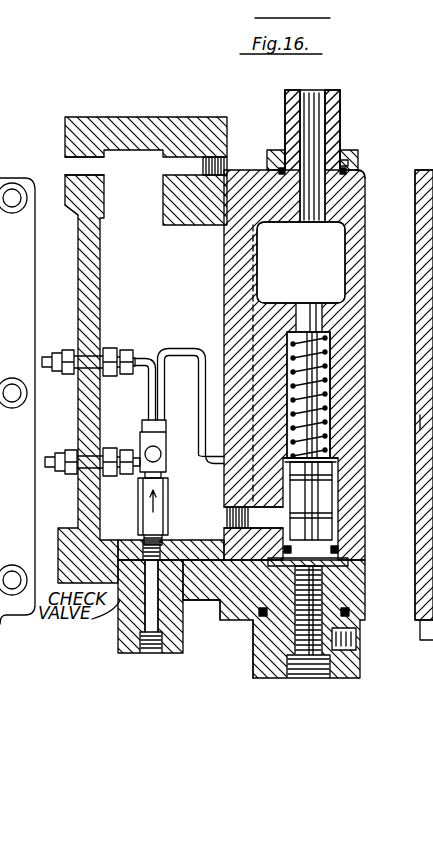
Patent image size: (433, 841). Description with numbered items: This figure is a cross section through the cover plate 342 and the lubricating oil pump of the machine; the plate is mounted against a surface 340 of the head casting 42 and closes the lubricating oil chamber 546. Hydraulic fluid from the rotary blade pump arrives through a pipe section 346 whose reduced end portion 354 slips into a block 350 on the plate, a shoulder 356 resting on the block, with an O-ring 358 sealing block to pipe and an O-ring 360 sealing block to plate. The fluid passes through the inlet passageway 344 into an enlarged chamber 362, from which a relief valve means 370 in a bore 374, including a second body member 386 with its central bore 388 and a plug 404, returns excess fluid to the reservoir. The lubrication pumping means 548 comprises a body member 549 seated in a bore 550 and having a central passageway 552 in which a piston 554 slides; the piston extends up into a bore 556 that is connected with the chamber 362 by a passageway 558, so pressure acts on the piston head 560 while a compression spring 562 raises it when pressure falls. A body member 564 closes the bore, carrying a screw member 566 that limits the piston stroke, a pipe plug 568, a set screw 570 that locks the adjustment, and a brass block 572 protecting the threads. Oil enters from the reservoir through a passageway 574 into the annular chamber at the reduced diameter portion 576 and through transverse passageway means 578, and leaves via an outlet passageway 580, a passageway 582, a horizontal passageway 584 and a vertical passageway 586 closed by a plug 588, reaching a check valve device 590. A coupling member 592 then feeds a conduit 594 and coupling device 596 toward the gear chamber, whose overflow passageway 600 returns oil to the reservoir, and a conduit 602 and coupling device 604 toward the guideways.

The housing 42 is at (130, 118).
The surface 340 is at (234, 170).
The cover plate 342 is at (350, 162).
The inlet passageway 344 is at (216, 224).
The pipe section 346 is at (338, 96).
The block 350 is at (347, 165).
The end portion 354 is at (278, 162).
The shoulder 356 is at (345, 150).
The O-ring 358 is at (272, 150).
The O-ring 360 is at (362, 172).
The enlarged chamber 362 is at (257, 290).
The relief valve means 370 is at (346, 562).
The bore 374 is at (340, 505).
The second body member 386 is at (428, 408).
The central bore 388 is at (428, 426).
The plug 404 is at (30, 136).
The chamber 546 is at (72, 213).
The pumping means 548 is at (249, 668).
The body member 549 is at (338, 460).
The bore 550 is at (332, 537).
The central passageway 552 is at (342, 490).
The piston 554 is at (252, 512).
The bore 556 is at (330, 345).
The passageway 558 is at (322, 320).
The head 560 is at (290, 336).
The compression spring 562 is at (330, 365).
The body member 564 is at (268, 676).
The screw member 566 is at (312, 681).
The pipe plug 568 is at (298, 679).
The set screw 570 is at (346, 680).
The brass block 572 is at (348, 605).
The passageway 574 is at (222, 545).
The reduced diameter portion 576 is at (340, 525).
The transverse passageway means 578 is at (337, 520).
The outlet passageway 580 is at (250, 617).
The passageway 582 is at (250, 645).
The horizontal passageway 584 is at (121, 600).
The vertical passageway 586 is at (118, 640).
The plug 588 is at (148, 656).
The check valve device 590 is at (140, 502).
The coupling member 592 is at (142, 450).
The conduit 594 is at (150, 356).
The coupling device 596 is at (110, 348).
The overflow passageway 600 is at (79, 165).
The conduit 602 is at (194, 350).
The coupling device 604 is at (78, 455).